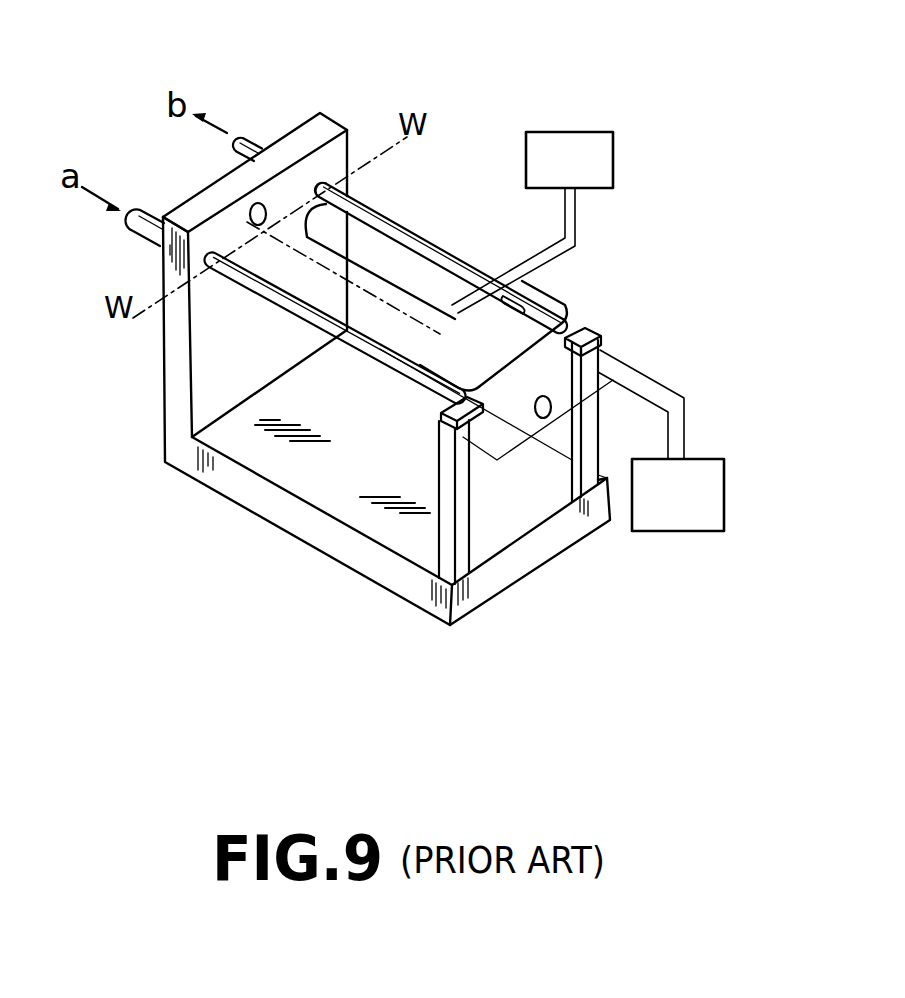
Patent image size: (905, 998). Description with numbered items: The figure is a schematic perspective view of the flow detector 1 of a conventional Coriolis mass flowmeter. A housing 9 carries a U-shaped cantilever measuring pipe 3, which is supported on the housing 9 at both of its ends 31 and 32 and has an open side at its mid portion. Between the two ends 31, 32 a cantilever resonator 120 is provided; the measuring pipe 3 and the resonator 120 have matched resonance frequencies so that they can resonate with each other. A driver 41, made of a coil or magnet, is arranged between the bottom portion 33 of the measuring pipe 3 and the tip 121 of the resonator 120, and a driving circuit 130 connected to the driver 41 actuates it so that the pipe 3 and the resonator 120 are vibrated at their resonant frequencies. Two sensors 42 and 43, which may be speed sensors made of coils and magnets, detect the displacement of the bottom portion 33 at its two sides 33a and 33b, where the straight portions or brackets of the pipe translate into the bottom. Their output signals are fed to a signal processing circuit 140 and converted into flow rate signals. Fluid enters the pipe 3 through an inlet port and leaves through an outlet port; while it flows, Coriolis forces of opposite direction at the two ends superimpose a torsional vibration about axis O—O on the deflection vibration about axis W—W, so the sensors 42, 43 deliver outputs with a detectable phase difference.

The flow detector 1 is at (464, 147).
The U-shaped cantilever measuring pipe 3 is at (545, 290).
The housing 9 is at (227, 473).
The end of the measuring pipe 31 is at (203, 250).
The end of the measuring pipe 32 is at (333, 182).
The bottom portion of the measuring pipe 33 is at (512, 387).
The side of the bottom portion 33a is at (450, 398).
The side of the bottom portion 33b is at (565, 337).
The driver 41 is at (513, 300).
The sensor 42 is at (460, 433).
The sensor 43 is at (595, 355).
The cantilever resonator 120 is at (380, 270).
The tip of the resonator 121 is at (447, 372).
The driving circuit 130 is at (612, 100).
The signal processing circuit 140 is at (695, 531).